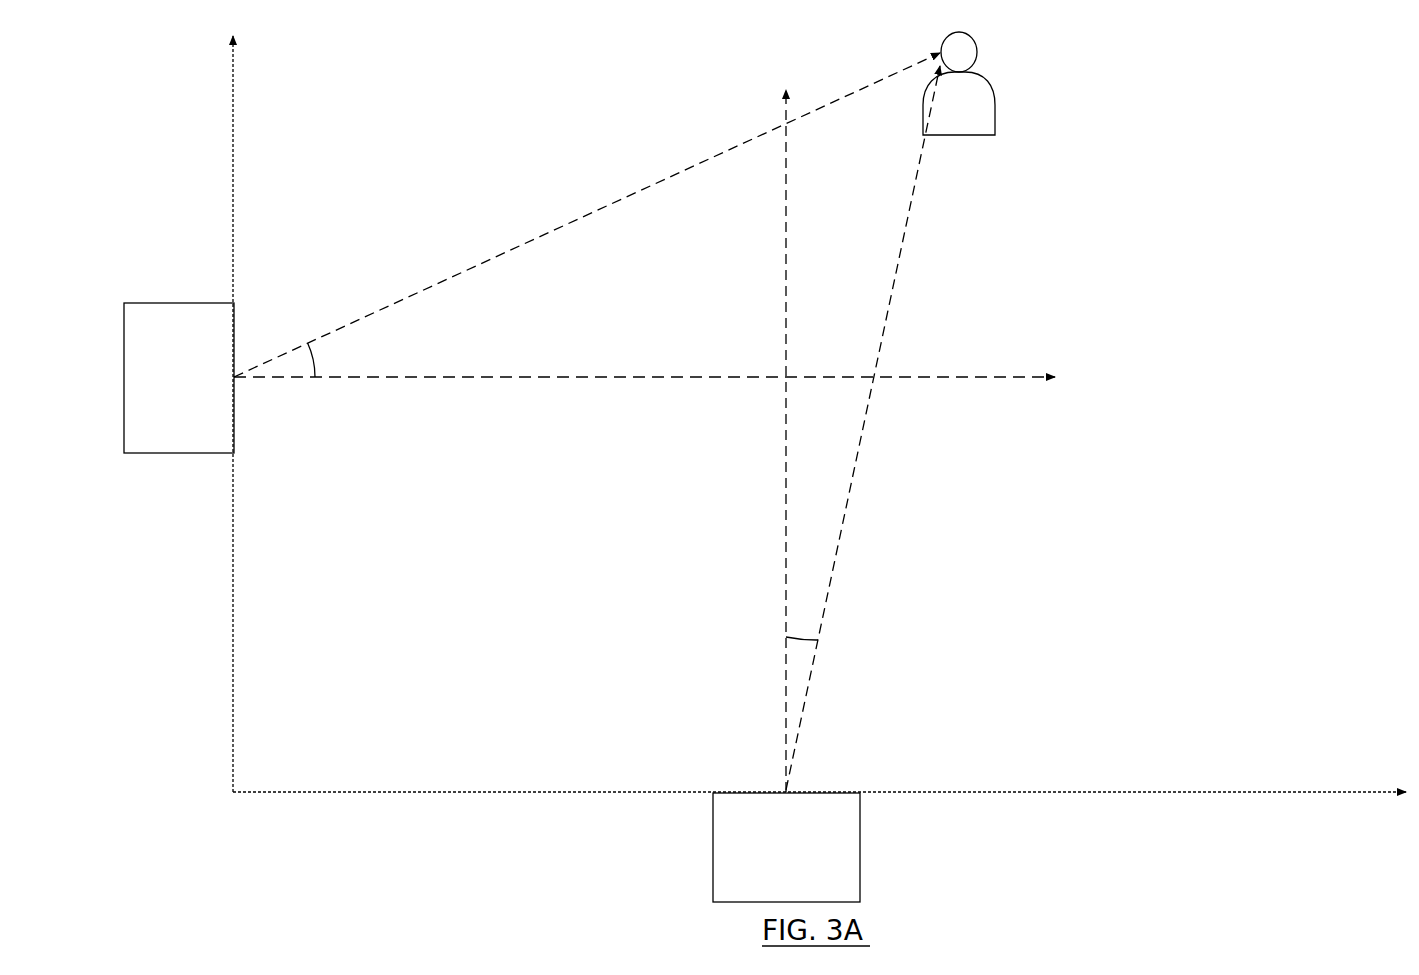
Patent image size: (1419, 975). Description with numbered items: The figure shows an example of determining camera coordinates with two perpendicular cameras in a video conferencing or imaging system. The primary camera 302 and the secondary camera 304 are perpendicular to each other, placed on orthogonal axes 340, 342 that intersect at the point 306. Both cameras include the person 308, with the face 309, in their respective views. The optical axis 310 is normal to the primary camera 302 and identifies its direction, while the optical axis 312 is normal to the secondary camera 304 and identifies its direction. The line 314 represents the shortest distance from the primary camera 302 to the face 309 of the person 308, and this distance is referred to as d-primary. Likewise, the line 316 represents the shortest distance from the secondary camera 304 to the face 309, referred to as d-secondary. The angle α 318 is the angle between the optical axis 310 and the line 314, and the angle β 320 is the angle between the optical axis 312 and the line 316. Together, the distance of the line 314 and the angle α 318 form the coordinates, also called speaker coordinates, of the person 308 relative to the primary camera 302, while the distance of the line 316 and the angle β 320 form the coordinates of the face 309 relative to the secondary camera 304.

The primary camera 302 is at (199, 417).
The secondary camera 304 is at (766, 887).
The point 306 is at (233, 792).
The person 308 is at (979, 126).
The face 309 is at (977, 52).
The optical axis 310 is at (1000, 377).
The optical axis 312 is at (786, 234).
The line 314 is at (685, 167).
The line 316 is at (910, 207).
The angle α 318 is at (313, 360).
The angle β 320 is at (805, 637).
The axis 340 is at (233, 110).
The axis 342 is at (1080, 792).